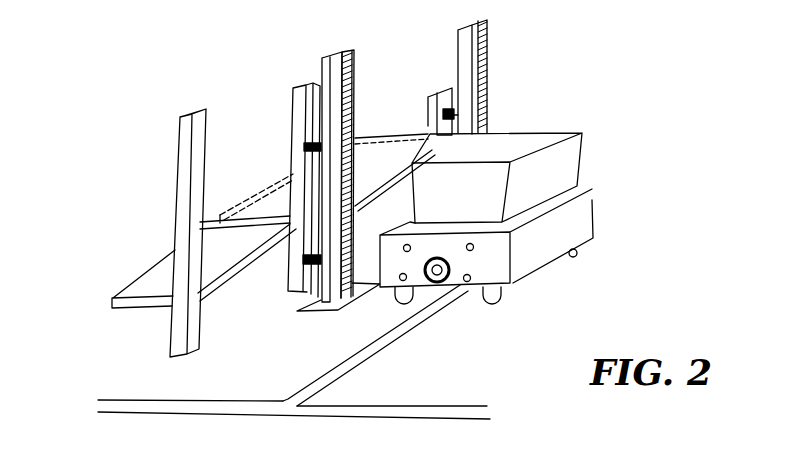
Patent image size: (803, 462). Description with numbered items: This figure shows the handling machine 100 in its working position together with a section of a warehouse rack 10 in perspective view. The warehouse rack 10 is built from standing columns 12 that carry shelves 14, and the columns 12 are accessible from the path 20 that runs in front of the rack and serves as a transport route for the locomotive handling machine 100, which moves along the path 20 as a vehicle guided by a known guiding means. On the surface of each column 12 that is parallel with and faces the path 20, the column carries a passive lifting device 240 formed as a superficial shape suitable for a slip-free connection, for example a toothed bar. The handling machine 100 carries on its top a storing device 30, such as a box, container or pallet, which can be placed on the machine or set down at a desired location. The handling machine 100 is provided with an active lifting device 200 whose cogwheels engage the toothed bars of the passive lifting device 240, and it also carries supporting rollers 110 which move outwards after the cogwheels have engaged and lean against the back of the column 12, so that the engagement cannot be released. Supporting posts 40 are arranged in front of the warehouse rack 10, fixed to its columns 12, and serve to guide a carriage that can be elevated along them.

The warehouse rack 10 is at (99, 181).
The standing column 12 is at (175, 158).
The shelf 14 is at (150, 280).
The path 20 is at (350, 357).
The storing device 30 is at (594, 156).
The supporting post 40 is at (323, 77).
The handling machine 100 is at (626, 218).
The supporting roller 110 is at (380, 288).
The active lifting device 200 is at (458, 276).
The passive lifting device 240 is at (364, 86).